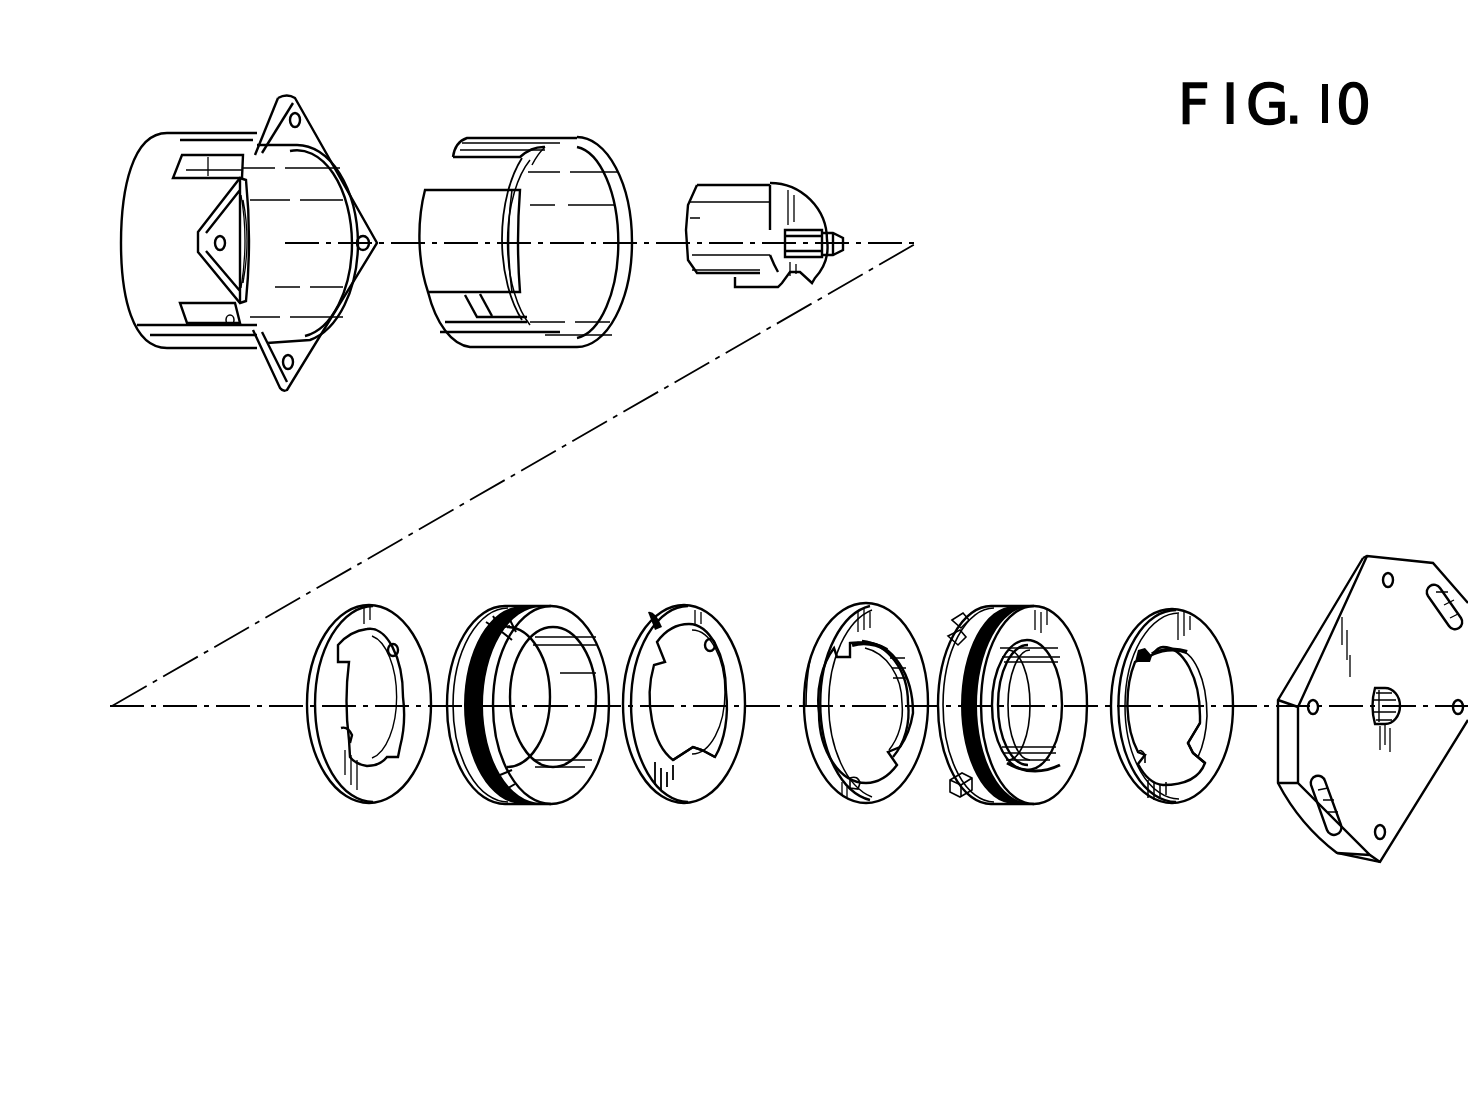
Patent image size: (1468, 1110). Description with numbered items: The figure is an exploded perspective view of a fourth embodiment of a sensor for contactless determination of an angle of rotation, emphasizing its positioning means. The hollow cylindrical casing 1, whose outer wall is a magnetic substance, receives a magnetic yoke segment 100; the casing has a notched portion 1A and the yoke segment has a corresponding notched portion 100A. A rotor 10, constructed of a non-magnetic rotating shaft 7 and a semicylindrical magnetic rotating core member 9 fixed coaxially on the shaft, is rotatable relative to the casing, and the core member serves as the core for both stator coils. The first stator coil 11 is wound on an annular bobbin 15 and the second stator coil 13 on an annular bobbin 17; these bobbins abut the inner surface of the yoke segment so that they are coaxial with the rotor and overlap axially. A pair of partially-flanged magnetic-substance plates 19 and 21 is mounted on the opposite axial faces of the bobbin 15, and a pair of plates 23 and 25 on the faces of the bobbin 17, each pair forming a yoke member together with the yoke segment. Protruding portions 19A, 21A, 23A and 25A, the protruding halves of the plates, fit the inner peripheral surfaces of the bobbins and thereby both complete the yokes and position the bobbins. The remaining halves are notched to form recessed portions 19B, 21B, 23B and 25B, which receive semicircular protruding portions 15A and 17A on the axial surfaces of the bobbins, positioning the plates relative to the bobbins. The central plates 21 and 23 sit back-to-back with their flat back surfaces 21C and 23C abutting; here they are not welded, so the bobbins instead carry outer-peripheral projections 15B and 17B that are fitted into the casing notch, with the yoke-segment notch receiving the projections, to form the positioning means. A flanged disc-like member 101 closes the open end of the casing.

The casing 1 is at (188, 134).
The notched portion 1A is at (228, 325).
The yoke segment 100 is at (524, 138).
The notched portion 100A is at (493, 298).
The rotor 10 is at (801, 218).
The rotating core member 9 is at (808, 202).
The rotating shaft 7 is at (824, 220).
The magnetic-substance plate 25 is at (391, 604).
The protruding portion 25A is at (340, 745).
The recessed portion 25B is at (400, 649).
The annular bobbin 17 is at (532, 702).
The protruding portion 17A is at (581, 625).
The outer-peripheral projection 17B is at (498, 788).
The second stator coil 13 is at (465, 770).
The magnetic-substance plate 23 is at (678, 605).
The protruding portion 23A is at (698, 758).
The recessed portion 23B is at (714, 643).
The back surface 23C is at (657, 765).
The magnetic-substance plate 21 is at (900, 702).
The protruding portion 21A is at (914, 635).
The recessed portion 21B is at (855, 789).
The back surface 21C is at (810, 657).
The annular bobbin 15 is at (985, 702).
The protruding portion 15A is at (1053, 768).
The outer-peripheral projection 15B is at (958, 795).
The first stator coil 11 is at (943, 770).
The magnetic-substance plate 19 is at (1177, 610).
The protruding portion 19A is at (1185, 725).
The recessed portion 19B is at (1140, 760).
The flanged disc-like member 101 is at (1347, 597).